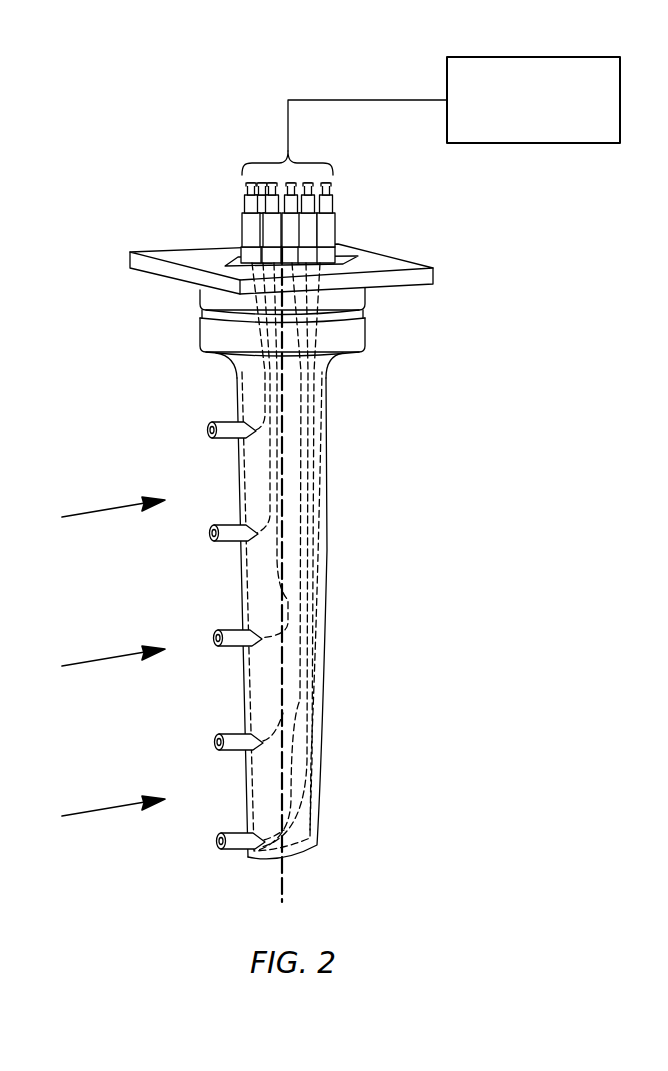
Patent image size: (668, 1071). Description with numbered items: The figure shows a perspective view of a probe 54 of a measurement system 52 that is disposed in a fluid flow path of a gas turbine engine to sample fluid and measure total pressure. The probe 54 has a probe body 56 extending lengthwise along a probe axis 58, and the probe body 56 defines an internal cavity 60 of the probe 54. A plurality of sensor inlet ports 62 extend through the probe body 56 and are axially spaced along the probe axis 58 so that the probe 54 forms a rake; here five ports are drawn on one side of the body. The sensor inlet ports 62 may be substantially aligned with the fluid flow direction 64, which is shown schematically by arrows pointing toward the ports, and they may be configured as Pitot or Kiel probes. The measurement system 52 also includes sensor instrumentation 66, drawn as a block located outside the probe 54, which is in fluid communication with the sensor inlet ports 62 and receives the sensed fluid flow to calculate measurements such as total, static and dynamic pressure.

The measurement system 52 is at (339, 537).
The probe 54 is at (345, 604).
The probe body 56 is at (290, 715).
The probe axis 58 is at (282, 892).
The internal cavity 60 is at (242, 388).
The sensor inlet ports 62 is at (219, 437).
The fluid flow direction 64 is at (78, 512).
The sensor instrumentation 66 is at (512, 143).